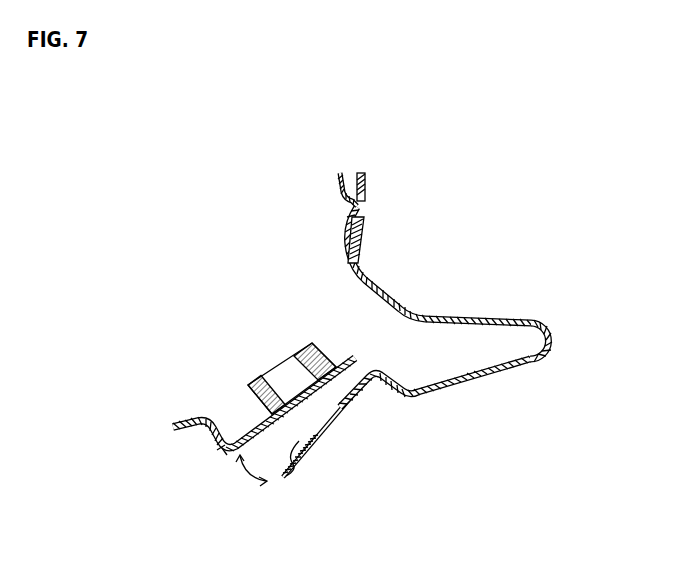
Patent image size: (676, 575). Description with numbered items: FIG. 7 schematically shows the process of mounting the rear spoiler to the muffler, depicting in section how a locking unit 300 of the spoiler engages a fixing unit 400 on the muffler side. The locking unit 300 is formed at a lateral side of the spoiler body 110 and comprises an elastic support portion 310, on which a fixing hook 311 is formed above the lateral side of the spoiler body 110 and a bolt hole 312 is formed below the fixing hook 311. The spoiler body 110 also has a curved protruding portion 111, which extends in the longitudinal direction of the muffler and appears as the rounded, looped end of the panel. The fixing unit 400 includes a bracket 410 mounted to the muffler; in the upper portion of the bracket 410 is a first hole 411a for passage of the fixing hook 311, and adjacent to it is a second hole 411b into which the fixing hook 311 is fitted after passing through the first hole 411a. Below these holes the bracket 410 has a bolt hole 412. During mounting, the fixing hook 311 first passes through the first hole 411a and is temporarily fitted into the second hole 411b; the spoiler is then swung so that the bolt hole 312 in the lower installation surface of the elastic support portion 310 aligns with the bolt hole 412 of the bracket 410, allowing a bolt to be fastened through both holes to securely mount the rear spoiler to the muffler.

The spoiler body 110 is at (483, 317).
The curved protruding portion 111 is at (549, 343).
The locking unit 300 is at (535, 191).
The elastic support portion 310 is at (406, 311).
The fixing hook 311 is at (362, 210).
The bolt hole 312 is at (335, 420).
The fixing unit 400 is at (167, 186).
The bracket 410 is at (251, 384).
The first hole 411a is at (347, 277).
The second hole 411b is at (353, 203).
The bolt hole 412 is at (285, 377).